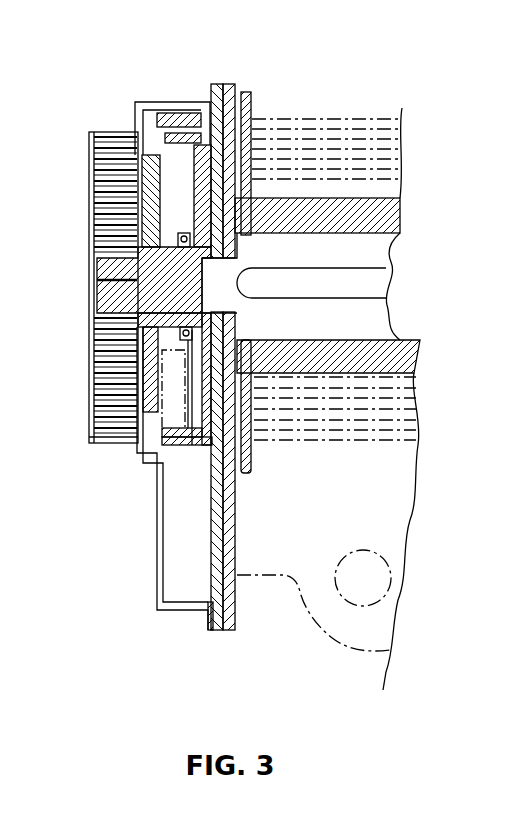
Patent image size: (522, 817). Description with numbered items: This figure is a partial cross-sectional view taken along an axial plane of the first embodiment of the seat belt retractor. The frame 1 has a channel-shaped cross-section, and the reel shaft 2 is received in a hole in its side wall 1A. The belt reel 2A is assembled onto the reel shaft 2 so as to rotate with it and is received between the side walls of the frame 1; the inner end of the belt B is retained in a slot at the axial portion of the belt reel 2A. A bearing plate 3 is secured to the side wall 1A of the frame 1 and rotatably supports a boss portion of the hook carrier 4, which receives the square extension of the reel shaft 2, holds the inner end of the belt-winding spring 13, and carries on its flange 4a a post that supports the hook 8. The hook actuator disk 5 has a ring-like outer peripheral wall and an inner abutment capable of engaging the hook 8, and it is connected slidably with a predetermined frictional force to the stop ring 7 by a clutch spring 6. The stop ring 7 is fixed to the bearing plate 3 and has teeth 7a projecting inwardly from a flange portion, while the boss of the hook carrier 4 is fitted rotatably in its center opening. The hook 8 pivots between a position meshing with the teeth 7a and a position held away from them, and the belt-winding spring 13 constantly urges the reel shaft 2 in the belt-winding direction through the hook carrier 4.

The frame 1 is at (288, 550).
The side wall 1A is at (233, 83).
The reel shaft 2 is at (372, 248).
The belt reel 2A is at (250, 100).
The bearing plate 3 is at (213, 83).
The hook carrier 4 is at (150, 280).
The flange 4a is at (147, 378).
The hook actuator disk 5 is at (193, 157).
The clutch spring 6 is at (187, 236).
The stop ring 7 is at (178, 114).
The teeth 7a is at (157, 463).
The hook 8 is at (162, 440).
The belt-winding spring 13 is at (115, 348).
The belt B is at (347, 120).